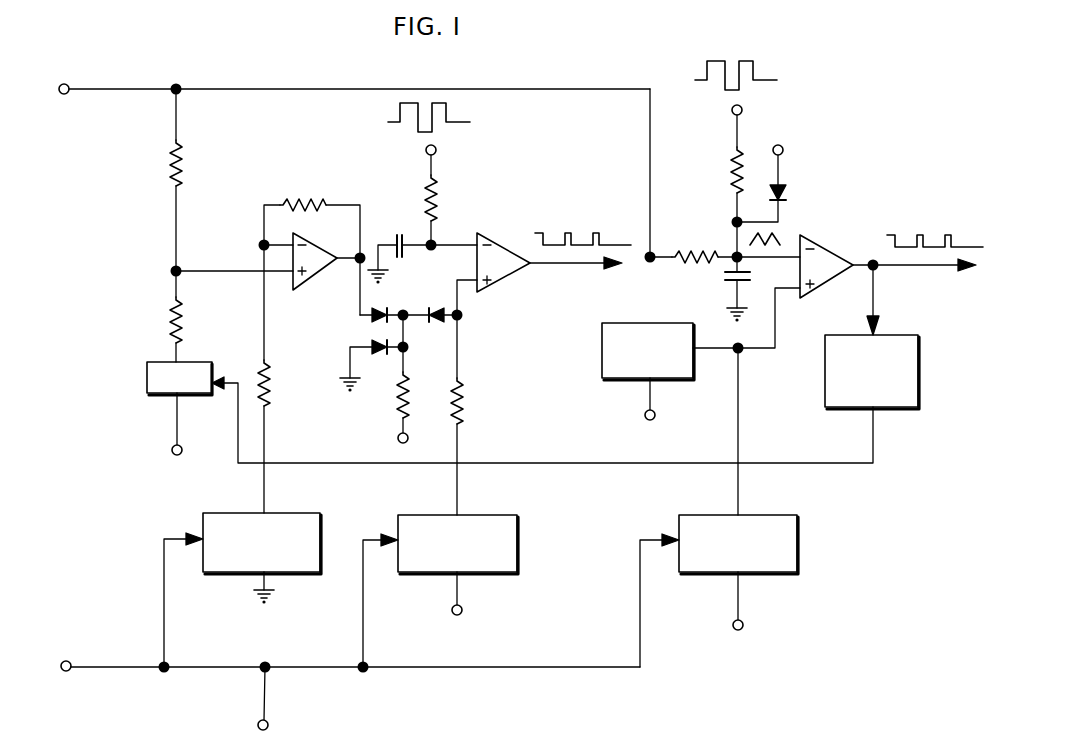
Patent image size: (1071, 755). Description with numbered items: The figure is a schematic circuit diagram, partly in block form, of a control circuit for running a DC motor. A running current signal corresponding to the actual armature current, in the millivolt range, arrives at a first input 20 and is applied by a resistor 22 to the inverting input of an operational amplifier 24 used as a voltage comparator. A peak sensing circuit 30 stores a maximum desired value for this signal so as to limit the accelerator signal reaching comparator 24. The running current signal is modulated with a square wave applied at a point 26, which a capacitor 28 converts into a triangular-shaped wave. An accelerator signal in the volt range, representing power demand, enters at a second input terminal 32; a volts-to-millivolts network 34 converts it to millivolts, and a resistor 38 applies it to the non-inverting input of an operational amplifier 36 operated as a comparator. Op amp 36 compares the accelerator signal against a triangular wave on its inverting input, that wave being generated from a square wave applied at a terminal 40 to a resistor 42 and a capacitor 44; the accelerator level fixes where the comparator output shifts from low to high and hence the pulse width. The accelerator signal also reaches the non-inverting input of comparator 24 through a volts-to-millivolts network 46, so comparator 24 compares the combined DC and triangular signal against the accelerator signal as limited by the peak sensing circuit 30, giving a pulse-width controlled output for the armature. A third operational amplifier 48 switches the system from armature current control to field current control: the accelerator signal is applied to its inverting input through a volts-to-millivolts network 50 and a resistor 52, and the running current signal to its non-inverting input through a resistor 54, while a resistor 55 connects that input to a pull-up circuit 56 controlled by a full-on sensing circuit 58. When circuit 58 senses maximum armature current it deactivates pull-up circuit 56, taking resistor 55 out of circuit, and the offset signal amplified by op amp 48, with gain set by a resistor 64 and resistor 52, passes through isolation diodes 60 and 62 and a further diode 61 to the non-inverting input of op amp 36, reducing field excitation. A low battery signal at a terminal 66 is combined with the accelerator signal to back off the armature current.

The first input 20 is at (70, 85).
The resistor 22 is at (692, 255).
The operational amplifier 24 is at (836, 243).
The point 26 is at (744, 110).
The capacitor 28 is at (725, 277).
The peak sensing circuit 30 is at (602, 357).
The second input terminal 32 is at (70, 662).
The volts-to-millivolts network 34 is at (517, 530).
The operational amplifier 36 is at (500, 243).
The resistor 38 is at (463, 400).
The terminal 40 is at (437, 149).
The resistor 42 is at (437, 200).
The capacitor 44 is at (396, 232).
The volts-to-millivolts network 46 is at (797, 530).
The operational amplifier 48 is at (330, 278).
The volts-to-millivolts network 50 is at (320, 522).
The resistor 52 is at (272, 368).
The resistor 54 is at (182, 160).
The resistor 55 is at (170, 308).
The pull-up circuit 56 is at (147, 378).
The full-on sensing circuit 58 is at (919, 375).
The diode 60 is at (378, 310).
The diode 61 is at (378, 352).
The diode 62 is at (436, 310).
The resistor 64 is at (314, 203).
The terminal 66 is at (268, 730).